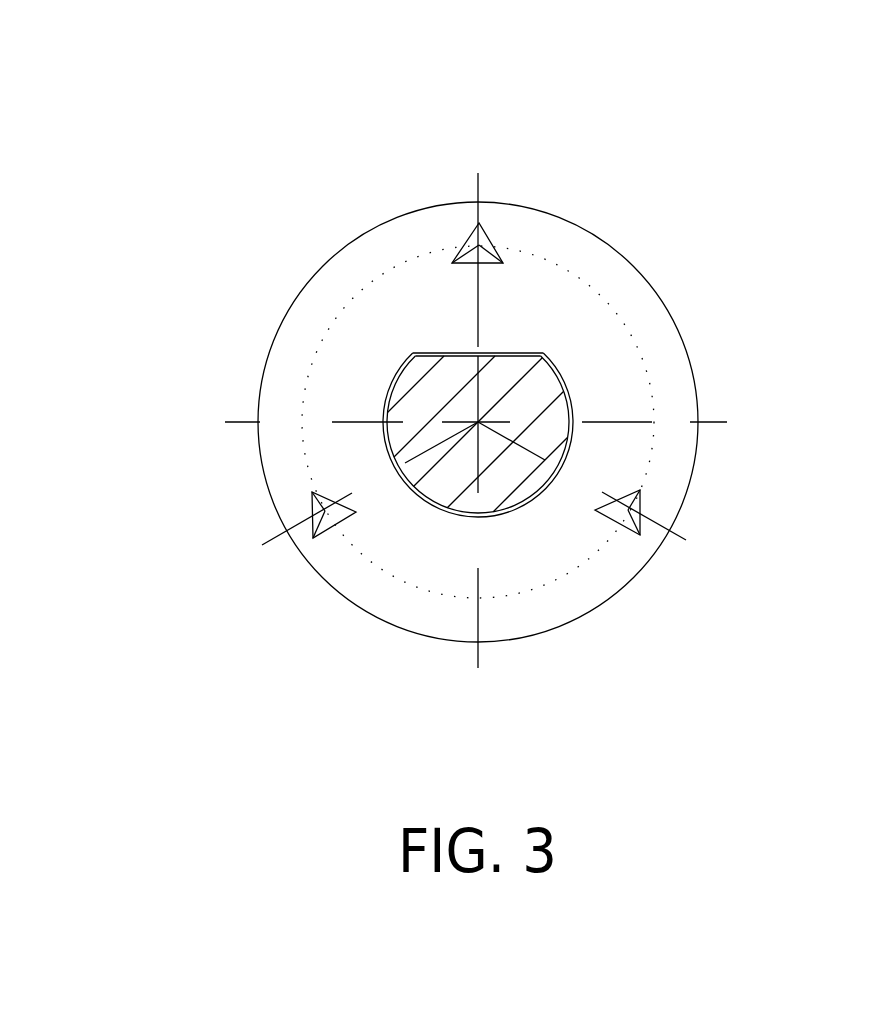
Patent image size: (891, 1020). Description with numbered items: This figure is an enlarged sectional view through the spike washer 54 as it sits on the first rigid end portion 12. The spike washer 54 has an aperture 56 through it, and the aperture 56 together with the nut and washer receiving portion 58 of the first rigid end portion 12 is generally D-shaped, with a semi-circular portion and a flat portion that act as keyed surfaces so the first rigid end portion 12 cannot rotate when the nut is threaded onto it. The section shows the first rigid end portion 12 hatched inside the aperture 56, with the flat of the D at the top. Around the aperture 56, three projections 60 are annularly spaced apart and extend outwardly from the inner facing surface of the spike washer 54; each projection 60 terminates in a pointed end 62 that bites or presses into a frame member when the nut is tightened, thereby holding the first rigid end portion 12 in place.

The first rigid end portion 12 is at (572, 375).
The spike washer 54 is at (663, 258).
The aperture 56 is at (538, 320).
The nut and washer receiving portion 58 is at (417, 375).
The projection 60 is at (437, 205).
The pointed end 62 is at (505, 215).